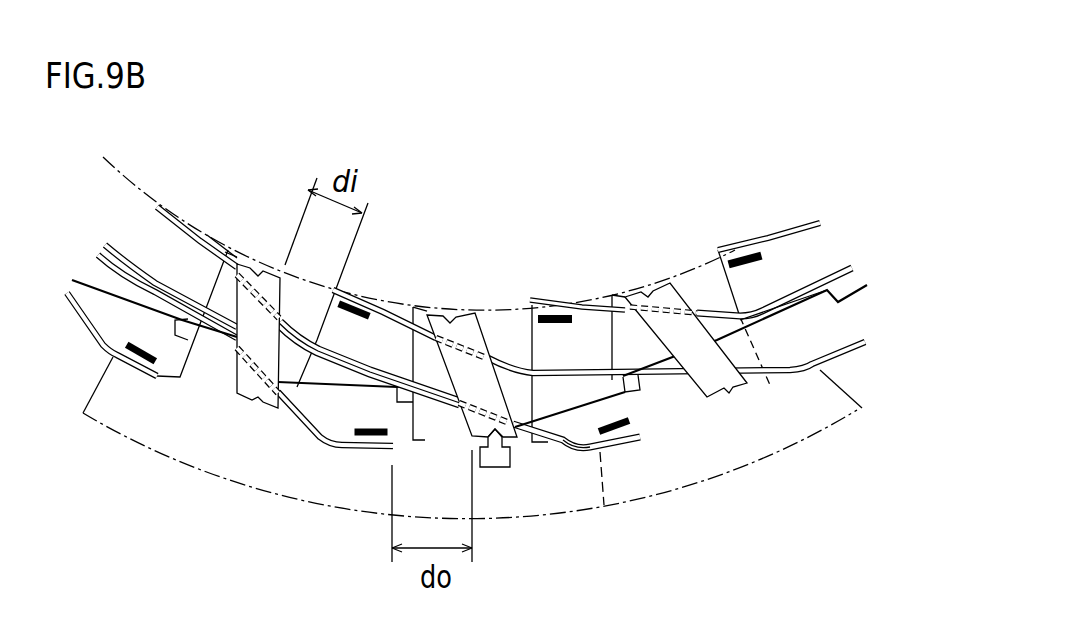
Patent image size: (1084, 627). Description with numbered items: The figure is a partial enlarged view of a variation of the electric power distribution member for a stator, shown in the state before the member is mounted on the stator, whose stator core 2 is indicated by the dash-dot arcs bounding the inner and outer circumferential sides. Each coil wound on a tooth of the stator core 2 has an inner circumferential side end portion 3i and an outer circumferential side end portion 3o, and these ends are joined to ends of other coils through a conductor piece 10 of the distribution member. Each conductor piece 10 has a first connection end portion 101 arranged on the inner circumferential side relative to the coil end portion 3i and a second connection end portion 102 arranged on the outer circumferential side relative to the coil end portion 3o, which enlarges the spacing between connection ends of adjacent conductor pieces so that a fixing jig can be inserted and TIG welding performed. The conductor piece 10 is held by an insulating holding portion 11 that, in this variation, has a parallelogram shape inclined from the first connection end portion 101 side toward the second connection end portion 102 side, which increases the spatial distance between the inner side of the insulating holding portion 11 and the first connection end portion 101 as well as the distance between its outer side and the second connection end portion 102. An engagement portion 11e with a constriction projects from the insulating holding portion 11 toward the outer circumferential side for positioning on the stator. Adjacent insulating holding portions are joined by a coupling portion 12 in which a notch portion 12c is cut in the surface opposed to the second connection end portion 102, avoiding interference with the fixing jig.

The stator core 2 is at (802, 463).
The conductor piece 10 is at (428, 385).
The insulating holding portion 11 is at (472, 380).
The engagement portion 11e is at (493, 462).
The coupling portion 12 is at (570, 385).
The notch portion 12c is at (610, 386).
The first connection end portion 101 is at (350, 288).
The second connection end portion 102 is at (352, 450).
The inner circumferential side end portion 3i is at (372, 300).
The outer circumferential side end portion 3o is at (352, 462).